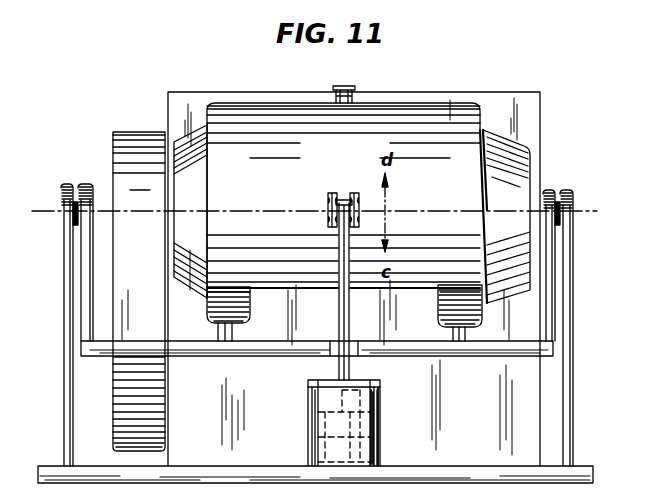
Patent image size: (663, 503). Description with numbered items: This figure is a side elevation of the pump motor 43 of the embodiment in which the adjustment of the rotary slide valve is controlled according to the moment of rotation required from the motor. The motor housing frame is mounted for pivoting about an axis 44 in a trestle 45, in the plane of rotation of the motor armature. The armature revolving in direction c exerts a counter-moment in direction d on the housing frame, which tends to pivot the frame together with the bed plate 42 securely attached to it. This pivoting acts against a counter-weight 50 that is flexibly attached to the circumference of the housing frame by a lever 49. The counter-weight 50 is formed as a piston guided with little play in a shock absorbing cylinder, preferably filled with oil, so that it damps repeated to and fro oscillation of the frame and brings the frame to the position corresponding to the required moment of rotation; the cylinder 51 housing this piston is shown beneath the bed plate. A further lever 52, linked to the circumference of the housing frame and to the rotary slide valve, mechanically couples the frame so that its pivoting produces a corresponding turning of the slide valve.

The bed plate 42 is at (244, 345).
The pump motor 43 is at (450, 107).
The axis 44 is at (585, 214).
The trestle 45 is at (61, 314).
The lever 49 is at (339, 302).
The counter-weight 50 is at (380, 418).
The cylinder interior mechanism 51 is at (312, 441).
The lever 52 is at (352, 90).